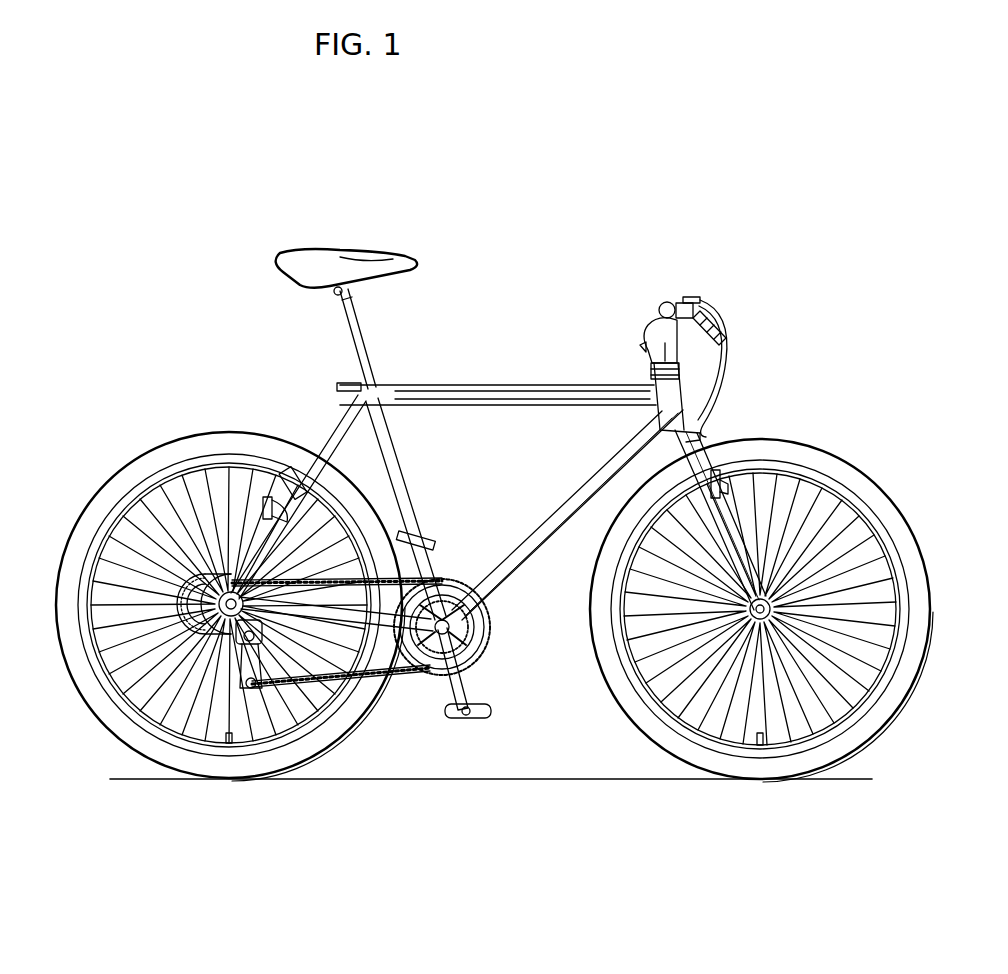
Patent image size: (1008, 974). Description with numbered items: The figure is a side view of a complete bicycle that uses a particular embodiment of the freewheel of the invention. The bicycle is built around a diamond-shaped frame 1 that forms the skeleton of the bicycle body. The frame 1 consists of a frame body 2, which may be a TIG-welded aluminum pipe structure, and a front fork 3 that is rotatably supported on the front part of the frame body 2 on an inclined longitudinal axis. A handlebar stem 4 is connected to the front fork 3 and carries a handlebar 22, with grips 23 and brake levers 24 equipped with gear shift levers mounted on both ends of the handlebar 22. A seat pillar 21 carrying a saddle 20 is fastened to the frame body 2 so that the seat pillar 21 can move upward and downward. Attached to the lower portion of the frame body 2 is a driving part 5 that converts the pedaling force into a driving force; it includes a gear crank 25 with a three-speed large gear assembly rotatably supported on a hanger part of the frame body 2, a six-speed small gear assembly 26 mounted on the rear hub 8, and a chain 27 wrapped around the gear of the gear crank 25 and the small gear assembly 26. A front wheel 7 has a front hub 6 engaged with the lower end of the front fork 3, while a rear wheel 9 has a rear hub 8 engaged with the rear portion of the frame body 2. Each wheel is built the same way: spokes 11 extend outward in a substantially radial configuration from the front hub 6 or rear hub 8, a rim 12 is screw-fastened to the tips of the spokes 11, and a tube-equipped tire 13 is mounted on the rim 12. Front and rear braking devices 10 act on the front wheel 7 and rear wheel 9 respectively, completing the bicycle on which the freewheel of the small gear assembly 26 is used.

The frame 1 is at (465, 457).
The frame body 2 is at (541, 362).
The front fork 3 is at (693, 456).
The handlebar stem 4 is at (695, 337).
The driving part 5 is at (470, 598).
The front hub 6 is at (832, 537).
The front wheel 7 is at (152, 441).
The rear hub 8 is at (125, 678).
The rear wheel 9 is at (474, 578).
The braking devices 10 is at (521, 441).
The spokes 11 is at (175, 470).
The rim 12 is at (128, 500).
The tube-equipped tire 13 is at (95, 506).
The saddle 20 is at (395, 257).
The seat pillar 21 is at (369, 344).
The handlebar 22 is at (700, 297).
The grips 23 is at (666, 300).
The brake levers 24 is at (724, 332).
The gear crank 25 is at (489, 624).
The small gear assembly 26 is at (277, 500).
The chain 27 is at (419, 684).